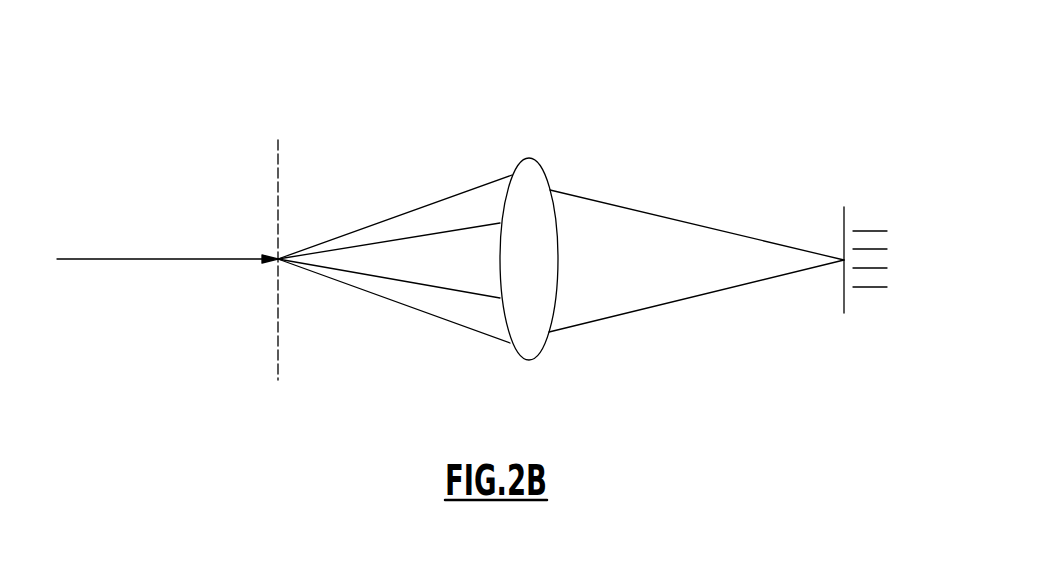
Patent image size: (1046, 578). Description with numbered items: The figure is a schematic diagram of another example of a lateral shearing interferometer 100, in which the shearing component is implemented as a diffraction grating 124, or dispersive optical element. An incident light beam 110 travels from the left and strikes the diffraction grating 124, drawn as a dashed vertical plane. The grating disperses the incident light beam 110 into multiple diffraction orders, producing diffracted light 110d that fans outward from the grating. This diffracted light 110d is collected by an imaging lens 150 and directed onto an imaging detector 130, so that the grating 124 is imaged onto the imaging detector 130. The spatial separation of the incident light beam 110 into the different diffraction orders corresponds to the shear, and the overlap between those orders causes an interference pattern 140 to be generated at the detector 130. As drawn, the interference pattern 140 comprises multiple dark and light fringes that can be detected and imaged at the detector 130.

The lateral shearing interferometer 100 is at (685, 72).
The incident light beam 110 is at (127, 260).
The diffracted light 110d is at (427, 182).
The diffraction grating 124 is at (278, 165).
The imaging detector 130 is at (842, 282).
The interference pattern 140 is at (875, 231).
The imaging lens 150 is at (542, 347).